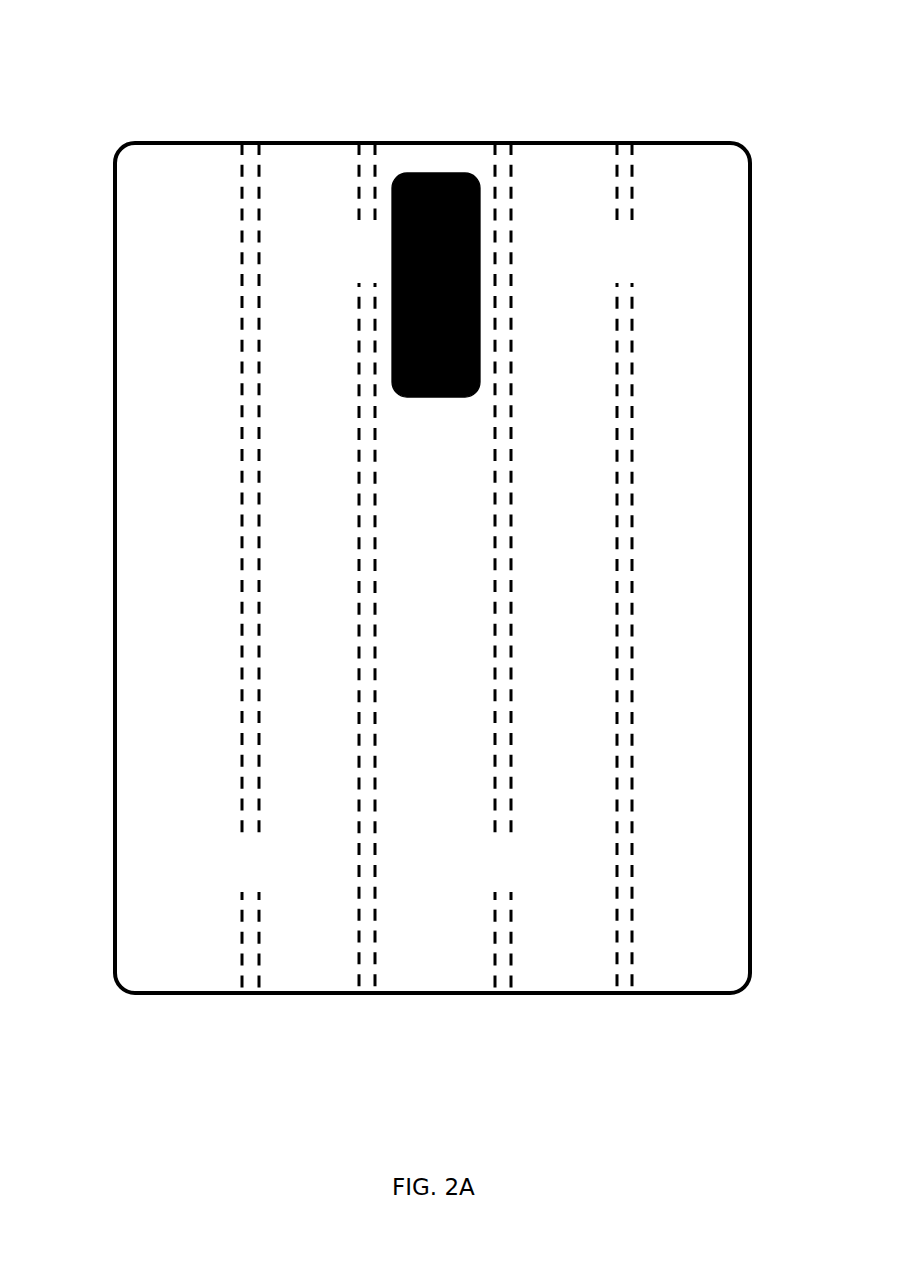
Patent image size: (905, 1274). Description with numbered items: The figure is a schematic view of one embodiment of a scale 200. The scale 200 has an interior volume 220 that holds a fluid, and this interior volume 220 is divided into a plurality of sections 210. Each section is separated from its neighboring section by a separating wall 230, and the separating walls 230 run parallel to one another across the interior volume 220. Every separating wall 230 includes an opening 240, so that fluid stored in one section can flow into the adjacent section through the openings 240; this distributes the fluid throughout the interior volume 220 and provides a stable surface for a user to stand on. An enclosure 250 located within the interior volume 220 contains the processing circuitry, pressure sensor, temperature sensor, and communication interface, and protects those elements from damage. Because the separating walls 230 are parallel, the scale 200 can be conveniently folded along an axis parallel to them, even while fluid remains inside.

The scale 200 is at (710, 68).
The sections 210 is at (570, 752).
The interior volume 220 is at (723, 682).
The separating wall 230 is at (238, 678).
The opening 240 is at (273, 887).
The enclosure 250 is at (432, 175).